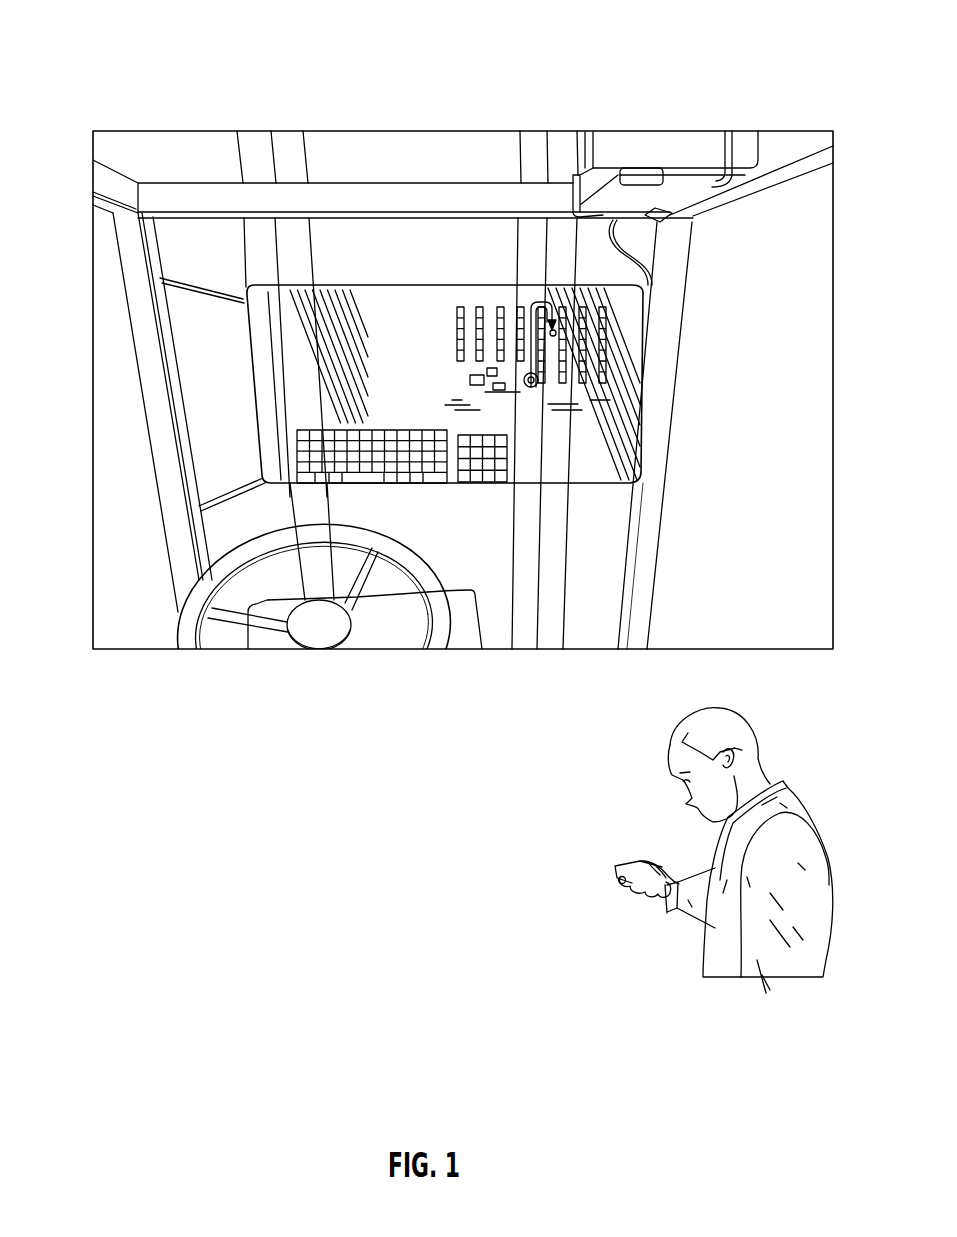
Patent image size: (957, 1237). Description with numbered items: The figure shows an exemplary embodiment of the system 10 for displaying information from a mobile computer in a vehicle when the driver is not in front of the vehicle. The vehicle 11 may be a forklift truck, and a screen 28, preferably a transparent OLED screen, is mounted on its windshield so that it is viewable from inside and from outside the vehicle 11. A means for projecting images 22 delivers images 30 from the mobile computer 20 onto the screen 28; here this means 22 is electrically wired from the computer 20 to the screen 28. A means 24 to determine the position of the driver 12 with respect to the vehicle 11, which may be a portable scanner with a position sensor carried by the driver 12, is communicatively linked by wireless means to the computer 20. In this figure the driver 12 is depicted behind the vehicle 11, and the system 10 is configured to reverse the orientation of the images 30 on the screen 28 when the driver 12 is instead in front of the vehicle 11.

The system 10 is at (140, 69).
The vehicle 11 is at (148, 338).
The driver 12 is at (797, 768).
The mobile computer 20 is at (603, 143).
The means for projecting images 22 is at (707, 150).
The means to determine driver position 24 is at (611, 854).
The screen 28 is at (261, 351).
The images 30 is at (517, 355).